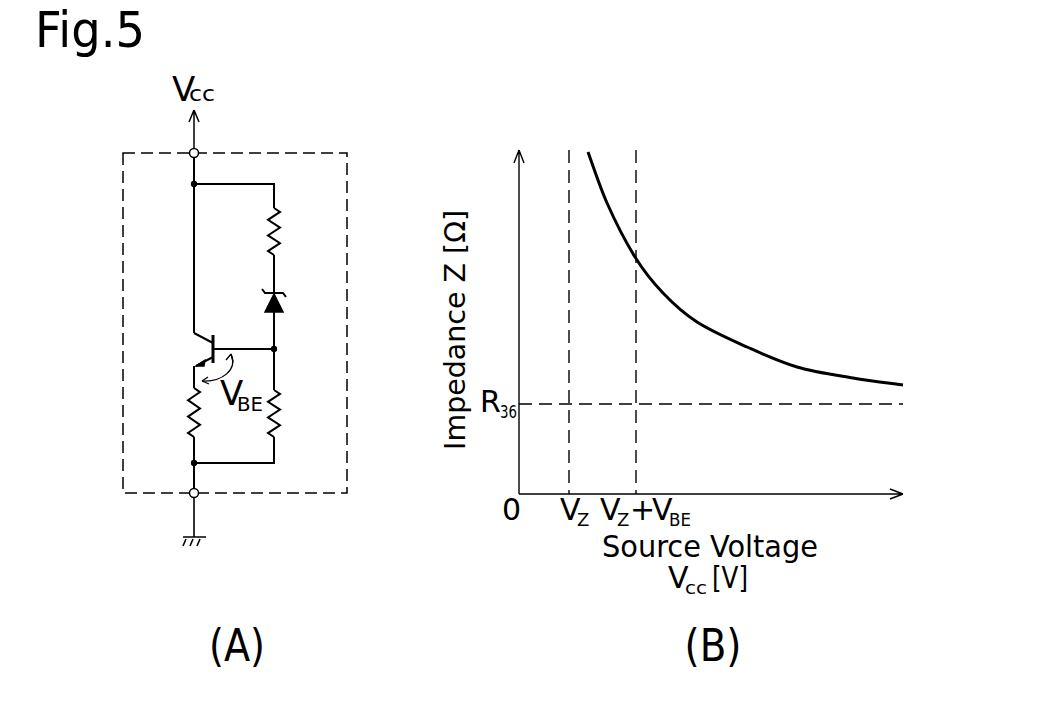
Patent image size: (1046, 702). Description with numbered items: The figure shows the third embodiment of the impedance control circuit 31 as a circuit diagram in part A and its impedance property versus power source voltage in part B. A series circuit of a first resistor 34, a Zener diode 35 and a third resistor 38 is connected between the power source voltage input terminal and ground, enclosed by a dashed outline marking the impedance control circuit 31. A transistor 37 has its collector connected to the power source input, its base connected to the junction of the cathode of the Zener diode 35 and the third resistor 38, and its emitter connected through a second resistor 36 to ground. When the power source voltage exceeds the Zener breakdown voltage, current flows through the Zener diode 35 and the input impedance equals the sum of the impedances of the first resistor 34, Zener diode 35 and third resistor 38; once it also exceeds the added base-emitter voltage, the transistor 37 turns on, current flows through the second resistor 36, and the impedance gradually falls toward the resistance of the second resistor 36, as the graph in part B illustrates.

The impedance control circuit 31 is at (122, 262).
The first resistor 34 is at (284, 234).
The Zener diode 35 is at (284, 302).
The second resistor 36 is at (201, 420).
The transistor 37 is at (202, 344).
The third resistor 38 is at (284, 398).